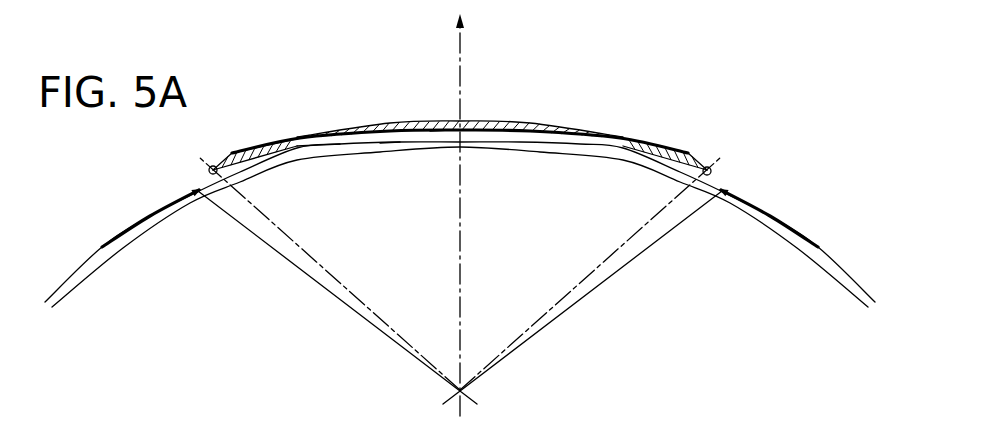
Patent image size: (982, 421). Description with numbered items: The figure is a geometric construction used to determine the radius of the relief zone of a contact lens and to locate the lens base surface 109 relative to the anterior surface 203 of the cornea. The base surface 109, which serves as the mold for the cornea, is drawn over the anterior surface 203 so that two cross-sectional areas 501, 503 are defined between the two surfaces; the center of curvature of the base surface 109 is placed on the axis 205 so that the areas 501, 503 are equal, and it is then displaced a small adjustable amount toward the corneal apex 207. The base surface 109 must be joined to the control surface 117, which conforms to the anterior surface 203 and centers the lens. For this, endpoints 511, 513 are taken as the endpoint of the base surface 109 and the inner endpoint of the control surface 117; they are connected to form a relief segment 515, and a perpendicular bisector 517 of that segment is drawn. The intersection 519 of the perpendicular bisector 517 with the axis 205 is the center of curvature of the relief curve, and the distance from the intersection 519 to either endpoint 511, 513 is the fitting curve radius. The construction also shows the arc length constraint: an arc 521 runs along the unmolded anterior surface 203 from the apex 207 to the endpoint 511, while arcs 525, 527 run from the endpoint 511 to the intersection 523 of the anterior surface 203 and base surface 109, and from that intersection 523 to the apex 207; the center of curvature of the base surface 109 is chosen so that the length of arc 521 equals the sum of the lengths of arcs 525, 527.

The base surface 109 is at (676, 148).
The control surface 117 is at (121, 238).
The anterior surface 203 is at (838, 278).
The axis 205 is at (470, 71).
The corneal apex 207 is at (462, 121).
The cross-sectional area 501 is at (251, 166).
The cross-sectional area 503 is at (445, 131).
The endpoint 511 is at (230, 152).
The endpoint 513 is at (190, 201).
The relief segment 515 is at (225, 154).
The perpendicular bisector 517 is at (318, 259).
The intersection 519 is at (467, 391).
The arc 521 is at (408, 120).
The intersection 523 is at (300, 147).
The arc 525 is at (393, 143).
The arc 527 is at (267, 140).